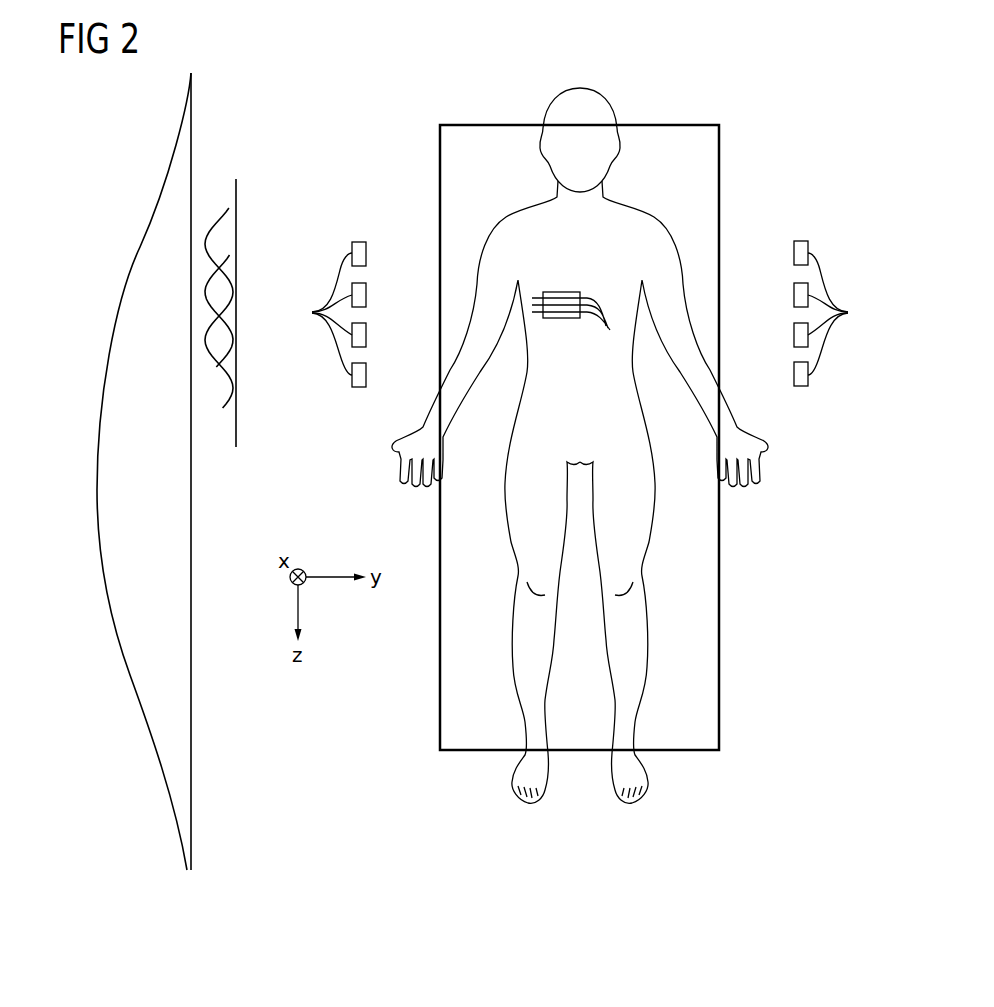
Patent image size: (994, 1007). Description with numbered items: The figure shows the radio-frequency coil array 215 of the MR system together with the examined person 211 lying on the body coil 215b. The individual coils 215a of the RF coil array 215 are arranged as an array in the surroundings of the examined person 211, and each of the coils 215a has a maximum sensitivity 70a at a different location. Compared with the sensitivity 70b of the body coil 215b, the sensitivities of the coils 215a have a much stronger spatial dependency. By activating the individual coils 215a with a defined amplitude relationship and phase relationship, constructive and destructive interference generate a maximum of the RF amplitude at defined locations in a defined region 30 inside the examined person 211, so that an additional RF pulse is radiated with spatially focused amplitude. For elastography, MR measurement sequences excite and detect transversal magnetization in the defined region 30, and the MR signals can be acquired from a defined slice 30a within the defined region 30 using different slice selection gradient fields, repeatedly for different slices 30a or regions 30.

The maximum sensitivity 70a is at (215, 204).
The sensitivity of the body coil 70b is at (124, 243).
The examined person 211 is at (602, 112).
The RF coil array 215 is at (362, 215).
The individual coils 215a is at (579, 314).
The body coil 215b is at (720, 598).
The defined region 30 is at (562, 291).
The defined slice 30a is at (607, 329).